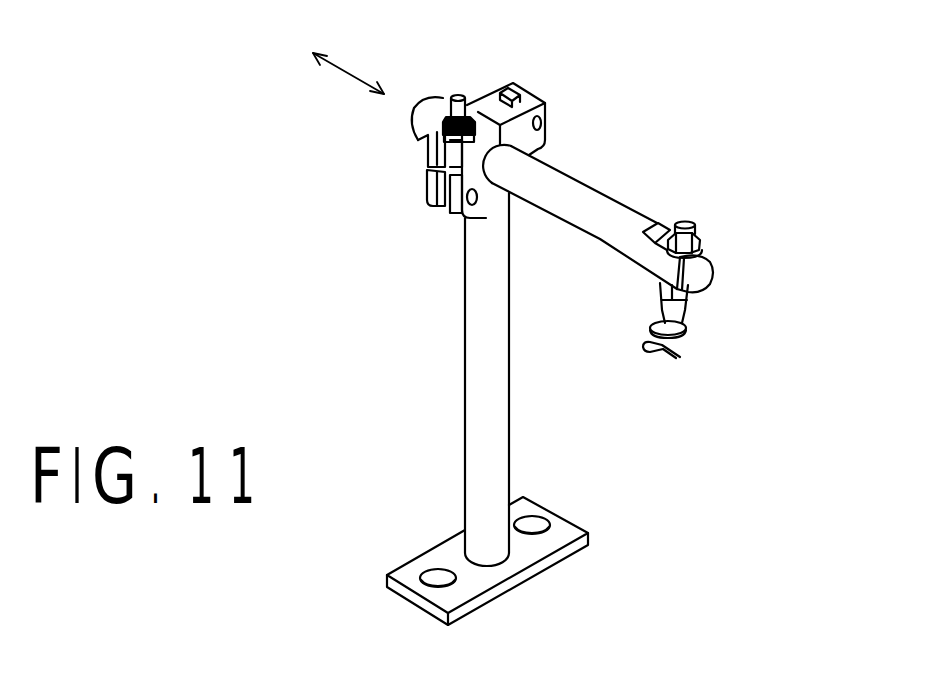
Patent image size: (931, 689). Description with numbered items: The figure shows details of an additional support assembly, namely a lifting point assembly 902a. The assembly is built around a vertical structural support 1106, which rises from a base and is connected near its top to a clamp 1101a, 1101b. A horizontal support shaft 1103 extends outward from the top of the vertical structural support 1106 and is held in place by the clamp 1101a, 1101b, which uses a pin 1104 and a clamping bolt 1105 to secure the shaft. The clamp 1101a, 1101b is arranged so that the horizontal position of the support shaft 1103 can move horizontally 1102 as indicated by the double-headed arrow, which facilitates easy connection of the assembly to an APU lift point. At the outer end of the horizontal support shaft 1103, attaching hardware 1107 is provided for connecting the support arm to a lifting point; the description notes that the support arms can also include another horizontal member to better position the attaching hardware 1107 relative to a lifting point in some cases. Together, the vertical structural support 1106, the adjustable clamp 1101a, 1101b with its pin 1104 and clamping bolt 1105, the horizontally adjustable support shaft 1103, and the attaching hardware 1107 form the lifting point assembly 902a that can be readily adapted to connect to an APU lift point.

The lifting point assembly 902a is at (181, 47).
The clamp 1101a is at (437, 155).
The clamp 1101b is at (433, 193).
The horizontal movement 1102 is at (352, 61).
The horizontal support shaft 1103 is at (583, 200).
The pin 1104 is at (555, 121).
The clamping bolt 1105 is at (458, 84).
The vertical structural support 1106 is at (524, 399).
The attaching hardware 1107 is at (713, 230).